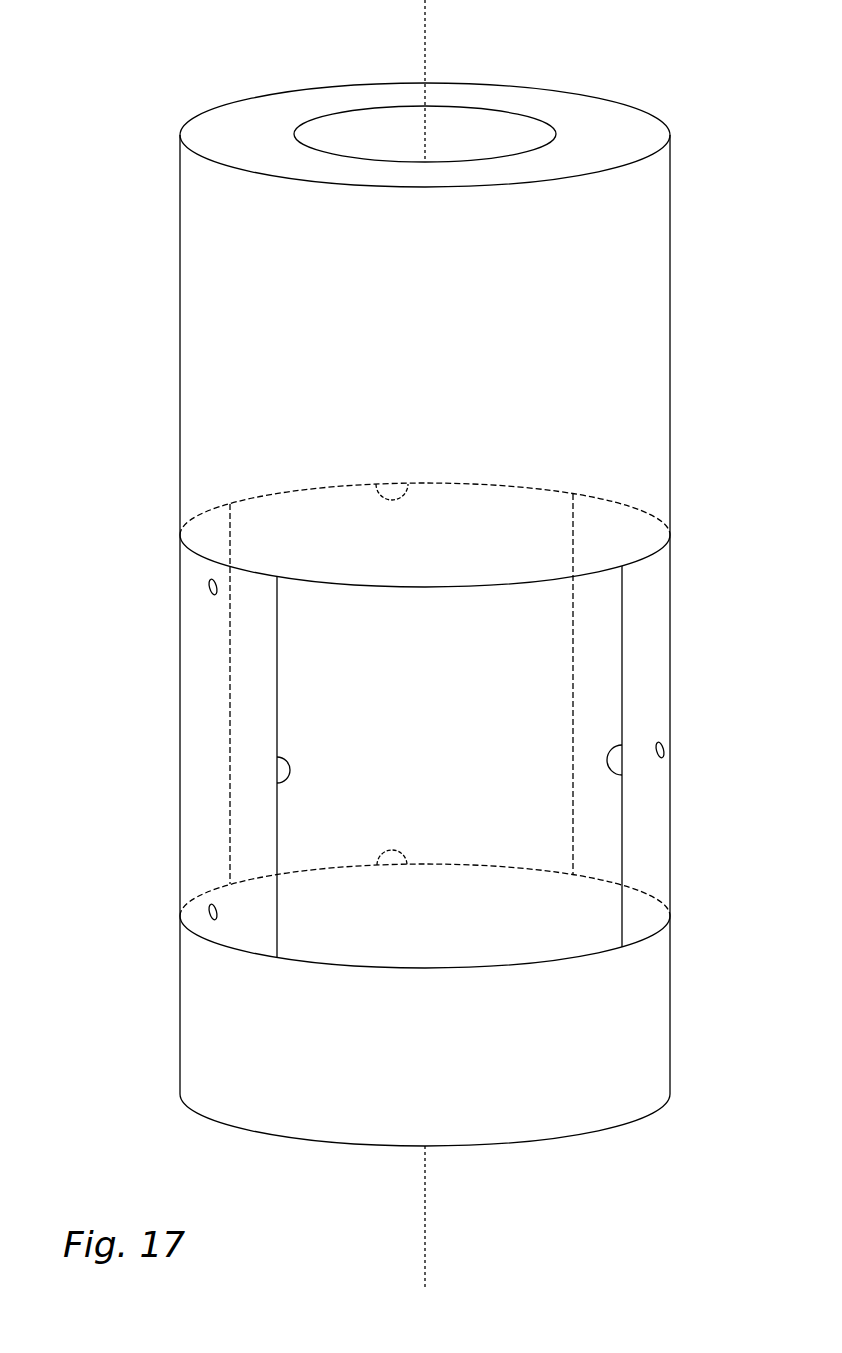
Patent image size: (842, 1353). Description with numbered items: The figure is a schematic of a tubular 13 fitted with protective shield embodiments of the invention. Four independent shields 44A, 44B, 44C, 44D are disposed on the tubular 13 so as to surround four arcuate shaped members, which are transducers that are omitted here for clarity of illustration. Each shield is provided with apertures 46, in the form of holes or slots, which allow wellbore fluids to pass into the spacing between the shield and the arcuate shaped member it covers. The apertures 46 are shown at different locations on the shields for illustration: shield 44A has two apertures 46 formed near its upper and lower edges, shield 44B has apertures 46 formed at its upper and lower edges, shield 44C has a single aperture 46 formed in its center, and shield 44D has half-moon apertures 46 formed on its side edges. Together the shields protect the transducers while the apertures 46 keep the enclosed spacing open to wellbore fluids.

The cylindrical body 13 is at (660, 323).
The shield 44A is at (181, 868).
The shield 44B is at (306, 487).
The shield 44C is at (601, 500).
The shield 44D is at (598, 957).
The aperture 46 is at (393, 490).